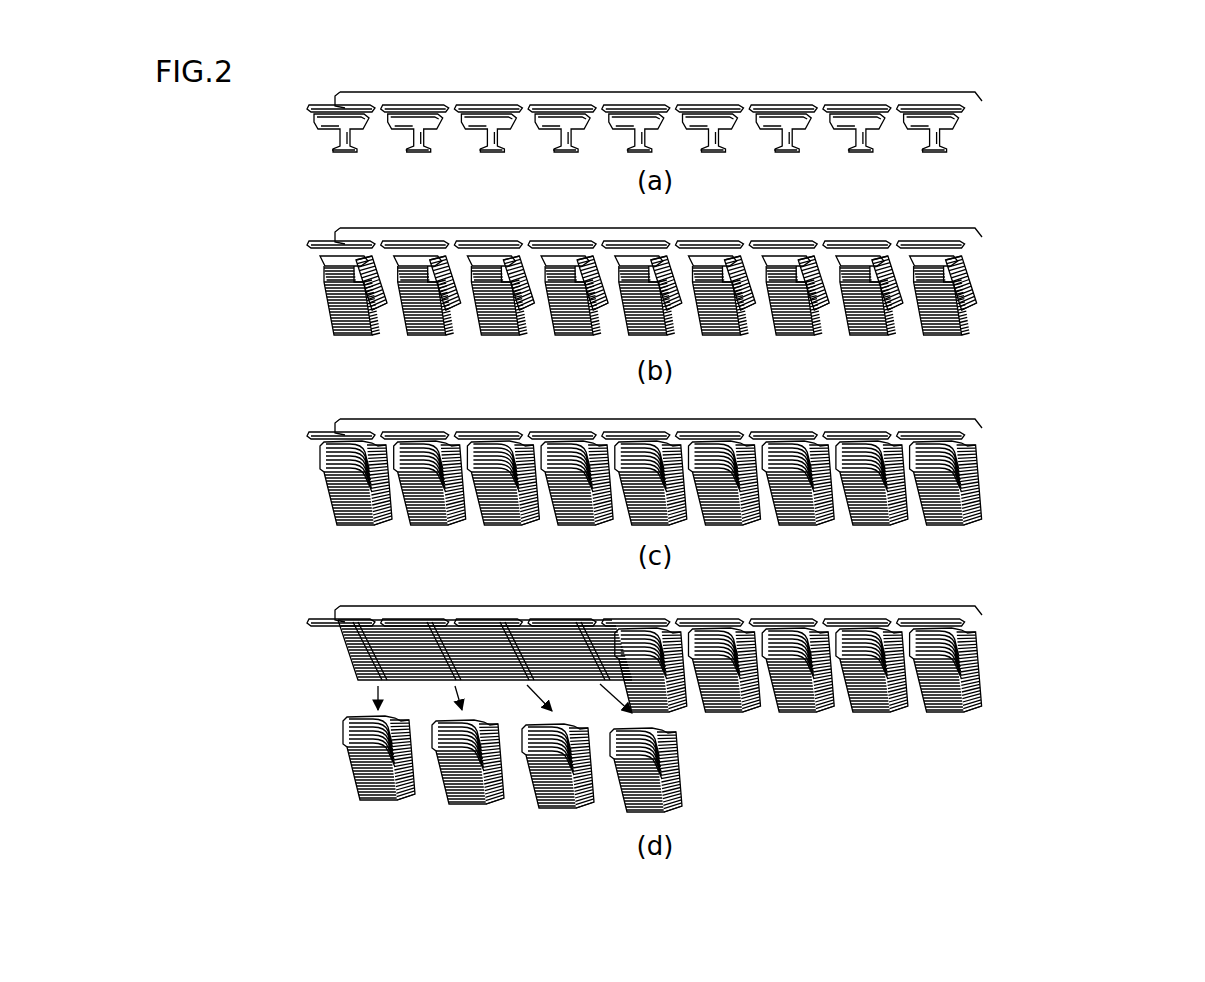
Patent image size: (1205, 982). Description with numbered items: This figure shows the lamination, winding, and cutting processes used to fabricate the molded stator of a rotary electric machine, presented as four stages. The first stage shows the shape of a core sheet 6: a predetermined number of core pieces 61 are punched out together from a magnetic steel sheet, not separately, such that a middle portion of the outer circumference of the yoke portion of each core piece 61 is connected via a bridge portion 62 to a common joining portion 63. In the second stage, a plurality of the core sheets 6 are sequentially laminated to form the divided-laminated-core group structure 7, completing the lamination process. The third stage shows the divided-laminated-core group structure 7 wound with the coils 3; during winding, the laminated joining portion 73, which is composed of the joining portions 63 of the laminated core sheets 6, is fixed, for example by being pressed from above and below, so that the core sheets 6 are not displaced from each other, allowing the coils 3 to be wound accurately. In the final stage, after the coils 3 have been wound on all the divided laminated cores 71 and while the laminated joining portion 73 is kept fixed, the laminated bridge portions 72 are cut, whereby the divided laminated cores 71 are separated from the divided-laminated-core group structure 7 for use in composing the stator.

The core sheet 6 is at (727, 158).
The core piece 61 is at (945, 135).
The bridge portion 62 is at (727, 110).
The joining portion 63 is at (968, 97).
The divided-laminated-core group structure 7 is at (686, 269).
The divided laminated core 71 is at (1003, 310).
The laminated bridge portion 72 is at (430, 247).
The laminated joining portion 73 is at (975, 228).
The coil 3 is at (326, 469).